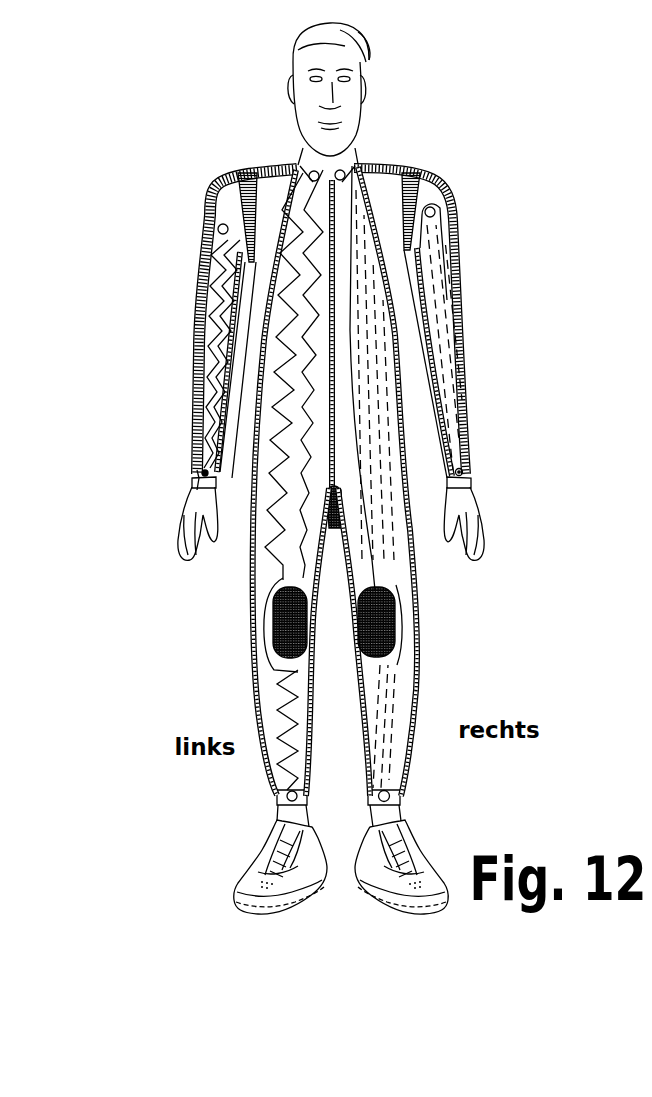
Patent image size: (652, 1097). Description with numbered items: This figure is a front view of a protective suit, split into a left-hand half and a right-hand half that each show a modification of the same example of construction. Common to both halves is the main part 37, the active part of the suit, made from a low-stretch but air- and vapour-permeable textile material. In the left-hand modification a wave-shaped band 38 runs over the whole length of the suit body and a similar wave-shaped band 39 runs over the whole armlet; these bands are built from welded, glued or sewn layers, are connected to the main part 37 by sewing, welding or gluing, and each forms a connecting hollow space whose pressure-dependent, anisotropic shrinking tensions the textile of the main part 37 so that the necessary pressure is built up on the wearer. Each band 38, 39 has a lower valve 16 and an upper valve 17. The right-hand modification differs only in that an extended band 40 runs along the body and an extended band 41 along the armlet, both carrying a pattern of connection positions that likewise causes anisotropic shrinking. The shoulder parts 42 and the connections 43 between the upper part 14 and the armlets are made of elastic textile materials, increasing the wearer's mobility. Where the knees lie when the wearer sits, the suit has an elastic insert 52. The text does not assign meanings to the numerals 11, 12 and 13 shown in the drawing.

The central front fastening strip 11 is at (337, 326).
The side seam strips 12 is at (396, 572).
The sleeve strip 13 is at (421, 272).
The upper part 14 is at (438, 192).
The lower valve 16 is at (462, 470).
The upper valve 17 is at (297, 162).
The main part 37 is at (268, 212).
The wave-shaped band 38 is at (283, 556).
The wave-shaped band 39 is at (210, 420).
The extended band 40 is at (382, 440).
The extended band 41 is at (444, 365).
The shoulder part 42 is at (370, 166).
The connection 43 is at (240, 180).
The elastic insert 52 is at (392, 633).